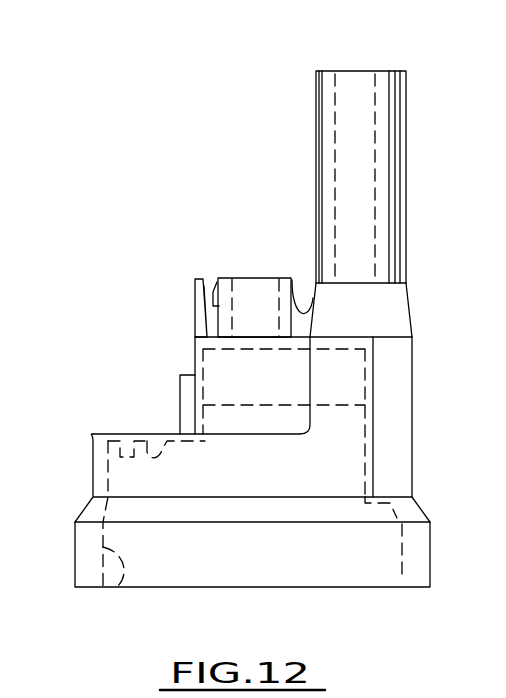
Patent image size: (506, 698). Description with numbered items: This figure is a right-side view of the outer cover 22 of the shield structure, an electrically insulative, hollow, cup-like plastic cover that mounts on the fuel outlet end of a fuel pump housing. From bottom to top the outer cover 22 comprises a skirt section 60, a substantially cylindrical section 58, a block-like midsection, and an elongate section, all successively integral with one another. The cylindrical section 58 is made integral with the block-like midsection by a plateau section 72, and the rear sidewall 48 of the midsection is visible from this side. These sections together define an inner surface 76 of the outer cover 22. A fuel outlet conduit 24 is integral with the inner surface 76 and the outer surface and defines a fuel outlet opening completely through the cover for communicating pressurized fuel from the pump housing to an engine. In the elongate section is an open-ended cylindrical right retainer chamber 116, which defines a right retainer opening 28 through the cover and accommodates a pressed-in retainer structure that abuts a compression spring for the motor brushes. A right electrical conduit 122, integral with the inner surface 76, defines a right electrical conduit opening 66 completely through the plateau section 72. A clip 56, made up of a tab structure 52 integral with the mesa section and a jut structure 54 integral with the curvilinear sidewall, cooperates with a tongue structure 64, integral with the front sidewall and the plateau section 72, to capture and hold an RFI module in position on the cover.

The outer cover 22 is at (150, 104).
The fuel outlet conduit 24 is at (401, 114).
The right retainer opening 28 is at (260, 277).
The rear sidewall 48 is at (374, 392).
The tab structure 52 is at (195, 325).
The jut structure 54 is at (216, 283).
The clip 56 is at (192, 285).
The cylindrical section 58 is at (88, 462).
The skirt section 60 is at (432, 543).
The tongue structure 64 is at (178, 385).
The right electrical conduit opening 66 is at (150, 431).
The plateau section 72 is at (103, 433).
The inner surface 76 is at (205, 386).
The right retainer chamber 116 is at (244, 306).
The right electrical conduit 122 is at (150, 468).